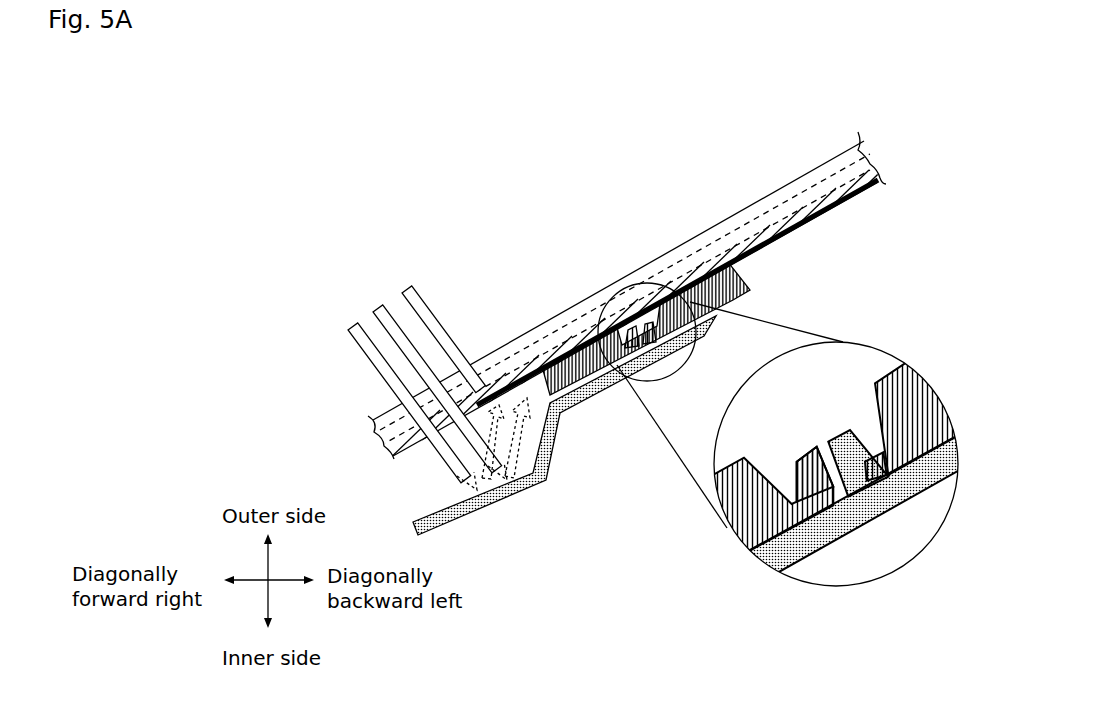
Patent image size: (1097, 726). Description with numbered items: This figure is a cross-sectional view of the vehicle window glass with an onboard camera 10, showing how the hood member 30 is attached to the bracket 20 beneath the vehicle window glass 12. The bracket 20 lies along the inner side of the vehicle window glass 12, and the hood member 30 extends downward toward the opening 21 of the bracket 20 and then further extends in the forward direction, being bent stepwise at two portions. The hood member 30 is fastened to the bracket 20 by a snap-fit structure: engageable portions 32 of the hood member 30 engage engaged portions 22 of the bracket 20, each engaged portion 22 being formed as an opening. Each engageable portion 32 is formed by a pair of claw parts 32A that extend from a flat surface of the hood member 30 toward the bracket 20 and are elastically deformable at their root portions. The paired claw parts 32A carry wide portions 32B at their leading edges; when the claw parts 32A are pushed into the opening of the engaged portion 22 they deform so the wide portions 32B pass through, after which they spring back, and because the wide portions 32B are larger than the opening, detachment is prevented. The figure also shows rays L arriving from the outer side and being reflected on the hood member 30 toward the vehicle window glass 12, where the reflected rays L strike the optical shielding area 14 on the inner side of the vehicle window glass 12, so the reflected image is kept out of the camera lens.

The vehicle window glass with an onboard camera 10 is at (843, 104).
The vehicle window glass 12 is at (665, 268).
The optical shielding area 14 is at (820, 213).
The bracket 20 is at (745, 274).
The opening of the bracket 21 is at (394, 454).
The engaged portion 22 is at (840, 382).
The hood member 30 is at (503, 494).
The engageable portion 32 is at (638, 360).
The claw part 32A is at (863, 480).
The wide portion 32B is at (843, 437).
The rays L is at (408, 272).